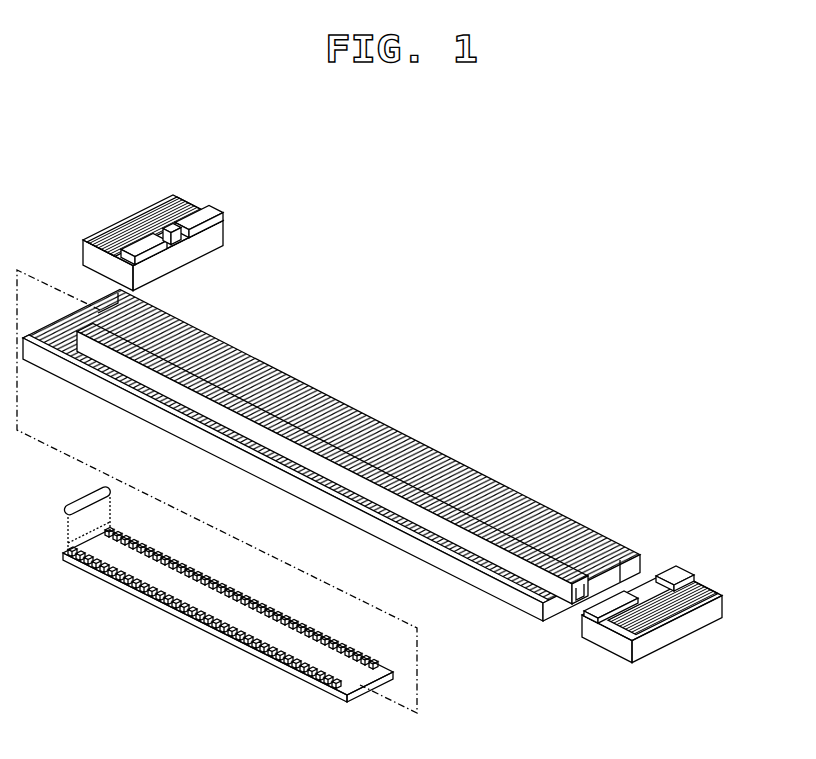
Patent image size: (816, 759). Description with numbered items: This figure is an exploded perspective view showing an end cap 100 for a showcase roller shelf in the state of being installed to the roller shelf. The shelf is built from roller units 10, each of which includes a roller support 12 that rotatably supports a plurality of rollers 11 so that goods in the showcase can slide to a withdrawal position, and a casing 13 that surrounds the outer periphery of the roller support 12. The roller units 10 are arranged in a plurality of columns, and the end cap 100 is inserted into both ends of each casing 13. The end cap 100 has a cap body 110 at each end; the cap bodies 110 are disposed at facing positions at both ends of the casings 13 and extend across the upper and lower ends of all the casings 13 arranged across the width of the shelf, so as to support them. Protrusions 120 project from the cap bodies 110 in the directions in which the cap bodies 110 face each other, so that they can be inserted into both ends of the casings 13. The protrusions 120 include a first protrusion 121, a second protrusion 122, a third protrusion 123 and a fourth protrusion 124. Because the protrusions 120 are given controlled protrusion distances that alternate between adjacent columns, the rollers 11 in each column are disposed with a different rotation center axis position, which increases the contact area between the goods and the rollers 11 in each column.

The roller unit 10 is at (62, 497).
The roller 11 is at (87, 518).
The roller support 12 is at (138, 600).
The casing 13 is at (80, 385).
The end cap 100 is at (437, 410).
The cap body 110 is at (128, 226).
The protrusion 120 is at (456, 414).
The first protrusion 121 is at (183, 258).
The second protrusion 122 is at (212, 245).
The third protrusion 123 is at (640, 597).
The fourth protrusion 124 is at (687, 578).